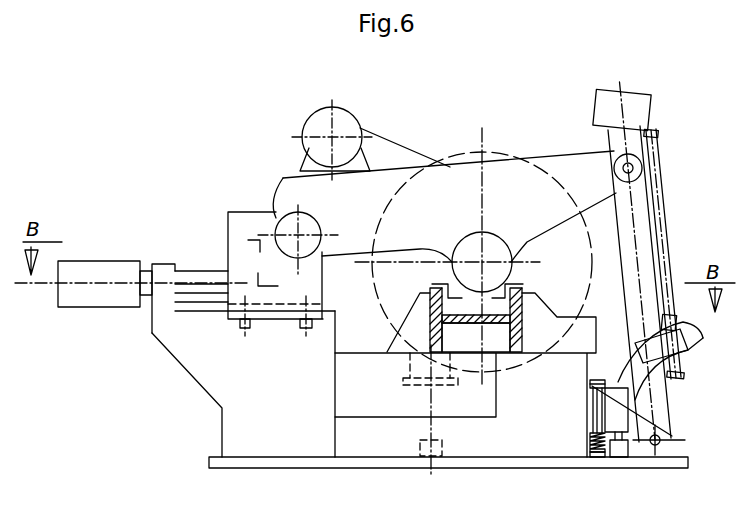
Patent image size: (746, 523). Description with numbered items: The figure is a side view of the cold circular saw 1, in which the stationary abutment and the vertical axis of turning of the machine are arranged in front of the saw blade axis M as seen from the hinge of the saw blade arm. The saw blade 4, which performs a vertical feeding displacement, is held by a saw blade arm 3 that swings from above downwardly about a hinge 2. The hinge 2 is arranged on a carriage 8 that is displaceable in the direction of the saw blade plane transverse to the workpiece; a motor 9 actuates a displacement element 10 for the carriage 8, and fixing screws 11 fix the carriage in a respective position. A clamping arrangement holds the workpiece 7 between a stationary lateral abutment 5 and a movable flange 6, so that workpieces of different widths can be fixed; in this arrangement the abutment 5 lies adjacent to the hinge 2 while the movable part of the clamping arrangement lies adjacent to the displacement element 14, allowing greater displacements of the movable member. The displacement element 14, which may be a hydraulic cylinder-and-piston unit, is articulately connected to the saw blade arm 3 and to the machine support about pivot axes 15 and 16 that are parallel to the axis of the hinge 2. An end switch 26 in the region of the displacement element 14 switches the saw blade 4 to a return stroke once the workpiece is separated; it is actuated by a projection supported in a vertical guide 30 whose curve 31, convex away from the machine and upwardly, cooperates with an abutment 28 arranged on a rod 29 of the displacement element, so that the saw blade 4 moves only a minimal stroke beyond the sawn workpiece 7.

The cold circular saw 1 is at (487, 79).
The hinge 2 is at (282, 212).
The saw blade arm 3 is at (385, 185).
The saw blade 4 is at (492, 157).
The lateral abutment 5 is at (417, 323).
The movable flange 6 is at (587, 322).
The workpiece 7 is at (522, 317).
The carriage 8 is at (243, 220).
The motor 9 is at (87, 269).
The displacement element for the carriage 10 is at (190, 277).
The fixing screws 11 is at (243, 329).
The displacement element 14 is at (650, 213).
The pivot axis 15 is at (618, 160).
The pivot axis 16 is at (653, 448).
The end switch 26 is at (623, 457).
The abutment 28 is at (683, 320).
The rod 29 is at (662, 230).
The vertical guide 30 is at (590, 414).
The curve 31 is at (638, 348).
The saw blade axis M is at (494, 243).